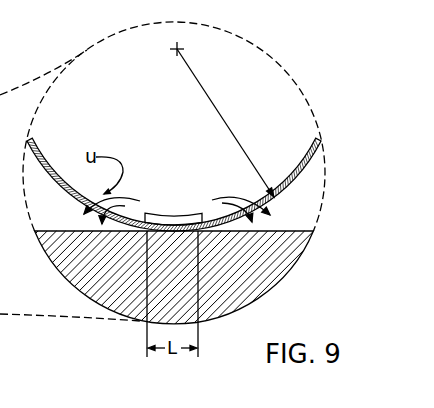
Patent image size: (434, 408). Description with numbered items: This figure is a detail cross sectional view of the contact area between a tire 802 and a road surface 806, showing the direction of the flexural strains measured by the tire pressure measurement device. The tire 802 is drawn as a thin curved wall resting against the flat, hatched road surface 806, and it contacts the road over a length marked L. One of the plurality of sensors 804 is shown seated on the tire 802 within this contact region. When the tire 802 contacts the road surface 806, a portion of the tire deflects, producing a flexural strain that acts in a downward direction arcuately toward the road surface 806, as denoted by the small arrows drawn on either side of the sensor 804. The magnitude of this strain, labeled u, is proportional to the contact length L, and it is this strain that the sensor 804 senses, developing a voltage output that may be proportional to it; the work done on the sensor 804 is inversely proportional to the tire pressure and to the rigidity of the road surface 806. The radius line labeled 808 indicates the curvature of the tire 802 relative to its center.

The tire 802 is at (295, 180).
The sensor 804 is at (172, 216).
The road surface 806 is at (128, 284).
The radius of curvature 808 is at (206, 90).